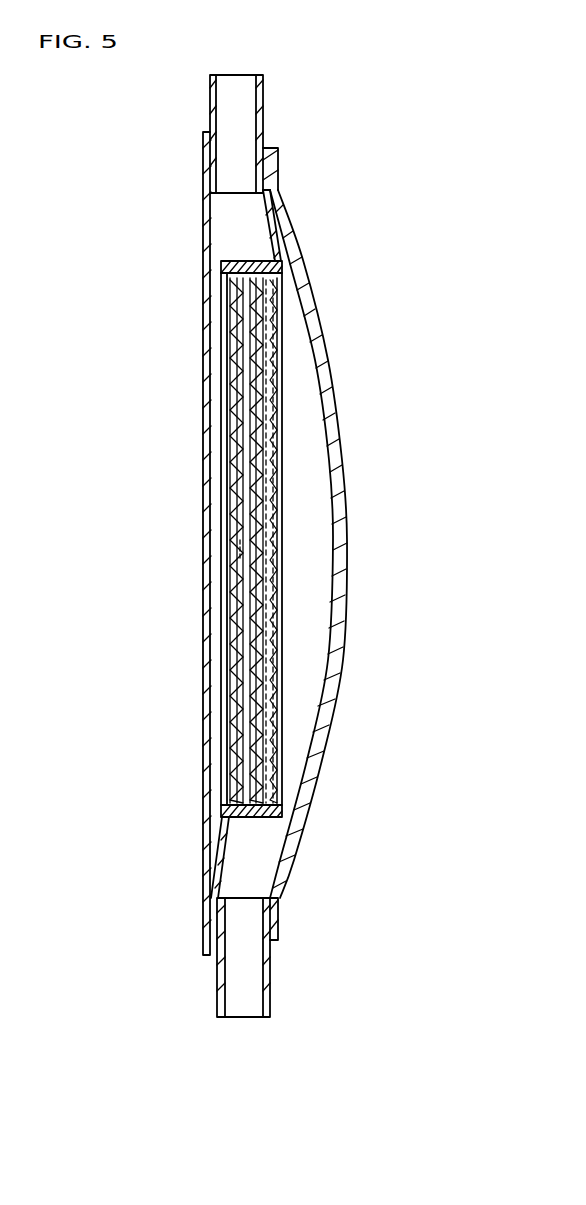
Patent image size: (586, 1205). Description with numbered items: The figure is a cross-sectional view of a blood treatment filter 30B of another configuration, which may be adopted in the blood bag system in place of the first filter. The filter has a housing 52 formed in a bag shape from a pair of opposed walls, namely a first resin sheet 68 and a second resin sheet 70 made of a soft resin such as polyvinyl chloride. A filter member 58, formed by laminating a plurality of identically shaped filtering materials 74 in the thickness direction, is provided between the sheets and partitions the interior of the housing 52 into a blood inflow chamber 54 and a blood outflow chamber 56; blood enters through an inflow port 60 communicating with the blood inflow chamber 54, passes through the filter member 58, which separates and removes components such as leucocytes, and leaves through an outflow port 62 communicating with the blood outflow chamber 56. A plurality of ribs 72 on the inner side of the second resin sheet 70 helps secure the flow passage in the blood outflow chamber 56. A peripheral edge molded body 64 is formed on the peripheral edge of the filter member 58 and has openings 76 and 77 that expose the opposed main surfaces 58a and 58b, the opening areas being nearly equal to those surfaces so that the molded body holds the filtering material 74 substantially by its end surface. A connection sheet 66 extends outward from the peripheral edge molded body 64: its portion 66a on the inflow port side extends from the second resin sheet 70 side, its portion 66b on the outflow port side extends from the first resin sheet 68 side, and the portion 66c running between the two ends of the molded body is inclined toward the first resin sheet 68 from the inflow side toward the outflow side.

The blood treatment filter 30B is at (135, 95).
The housing 52 is at (200, 270).
The blood inflow chamber 54 is at (213, 226).
The blood outflow chamber 56 is at (308, 657).
The filter member 58 is at (282, 384).
The main surface of filter member 58a is at (232, 597).
The main surface of filter member 58b is at (280, 603).
The inflow port 60 is at (263, 95).
The outflow port 62 is at (265, 997).
The peripheral edge molded body 64 is at (277, 824).
The connection sheet 66 is at (258, 212).
The portion of connection sheet on inflow port side 66a is at (276, 234).
The portion of connection sheet on outflow port side 66b is at (220, 850).
The portion of connection sheet extending along peripheral edge molded body 66c is at (245, 550).
The first resin sheet 68 is at (206, 431).
The second resin sheet 70 is at (343, 512).
The rib 72 is at (333, 545).
The filtering material 74 is at (268, 506).
The opening of peripheral edge molded body 76 is at (230, 352).
The opening of peripheral edge molded body 77 is at (278, 422).